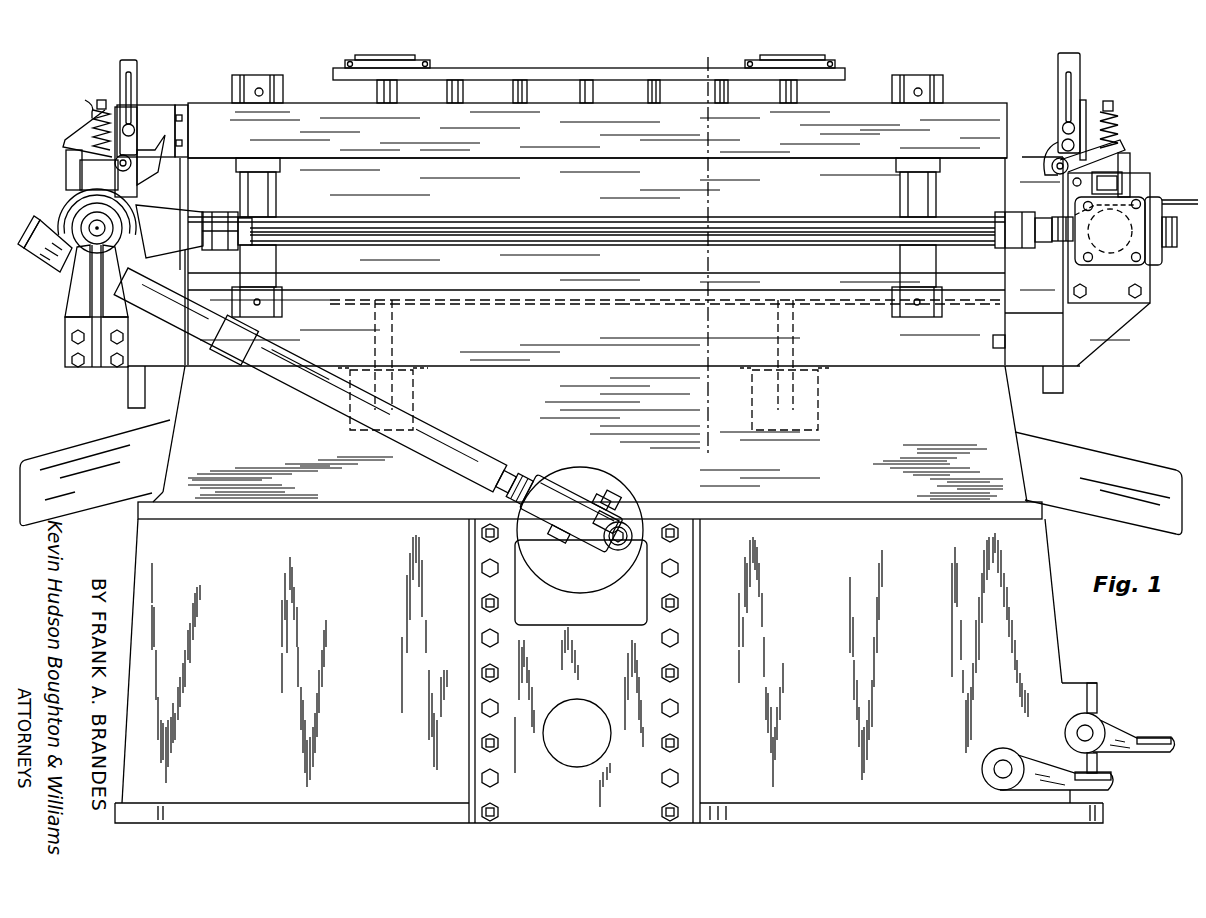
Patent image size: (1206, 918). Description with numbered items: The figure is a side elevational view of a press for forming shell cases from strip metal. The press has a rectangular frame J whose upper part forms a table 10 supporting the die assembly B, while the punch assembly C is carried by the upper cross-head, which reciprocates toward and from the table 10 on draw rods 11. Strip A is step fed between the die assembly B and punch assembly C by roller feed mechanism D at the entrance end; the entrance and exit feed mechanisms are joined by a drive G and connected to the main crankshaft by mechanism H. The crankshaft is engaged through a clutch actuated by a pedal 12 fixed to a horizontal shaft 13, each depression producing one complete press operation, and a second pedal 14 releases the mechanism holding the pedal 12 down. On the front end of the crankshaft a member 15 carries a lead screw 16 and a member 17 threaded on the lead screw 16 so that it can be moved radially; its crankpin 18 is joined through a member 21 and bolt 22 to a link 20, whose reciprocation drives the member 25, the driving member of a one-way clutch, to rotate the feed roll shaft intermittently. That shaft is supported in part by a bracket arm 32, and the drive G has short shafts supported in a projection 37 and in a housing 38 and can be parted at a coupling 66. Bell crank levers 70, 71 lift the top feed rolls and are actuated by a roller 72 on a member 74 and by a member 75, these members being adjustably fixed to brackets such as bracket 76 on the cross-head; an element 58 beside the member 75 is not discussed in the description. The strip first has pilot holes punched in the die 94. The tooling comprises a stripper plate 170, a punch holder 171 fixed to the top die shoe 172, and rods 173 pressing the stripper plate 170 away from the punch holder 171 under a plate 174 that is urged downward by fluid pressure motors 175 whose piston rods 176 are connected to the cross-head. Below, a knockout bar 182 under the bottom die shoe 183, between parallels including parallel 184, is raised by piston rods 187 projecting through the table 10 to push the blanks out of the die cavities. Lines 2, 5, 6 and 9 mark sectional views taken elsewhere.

The section line 2- 2 is at (108, 78).
The section line 5- 5 is at (1107, 100).
The section line 6- 6 is at (50, 205).
The center line 9- 9 is at (700, 57).
The table 10 is at (505, 355).
The draw rods 11 is at (245, 74).
The pedal 12 is at (1112, 776).
The horizontal shaft 13 is at (995, 769).
The second pedal 14 is at (1148, 737).
The member 15 is at (604, 580).
The lead screw 16 is at (555, 545).
The member 17 is at (645, 546).
The crankpin 18 is at (622, 551).
The link 20 is at (455, 466).
The member 21 is at (625, 515).
The bolt 22 is at (615, 500).
The member 25 is at (63, 268).
The bracket arm 32 is at (68, 324).
The projection 37 is at (170, 218).
The housing 38 is at (1120, 278).
The spring 58 is at (1118, 112).
The coupling 66 is at (1012, 246).
The bell crank lever 70 is at (147, 170).
The bell crank lever 71 is at (1042, 168).
The roller 72 is at (140, 150).
The member 74 is at (137, 72).
The member 75 is at (1066, 70).
The bracket 76 is at (178, 130).
The die 94 is at (639, 282).
The stripper plate 170 is at (692, 237).
The punch holder 171 is at (828, 222).
The top die shoe 172 is at (617, 162).
The rods 173 is at (513, 92).
The plate 174 is at (588, 70).
The fluid pressure motors 175 is at (432, 62).
The piston rods 176 is at (377, 92).
The knockout bar 182 is at (366, 310).
The bottom die shoe 183 is at (626, 282).
The parallel 184 is at (512, 308).
The piston rods 187 is at (778, 326).
The strip A is at (768, 246).
The die assembly B is at (806, 262).
The punch assembly C is at (838, 178).
The roller feed mechanism D is at (1132, 168).
The drive G is at (345, 236).
The mechanism H is at (228, 320).
The frame J is at (1048, 636).